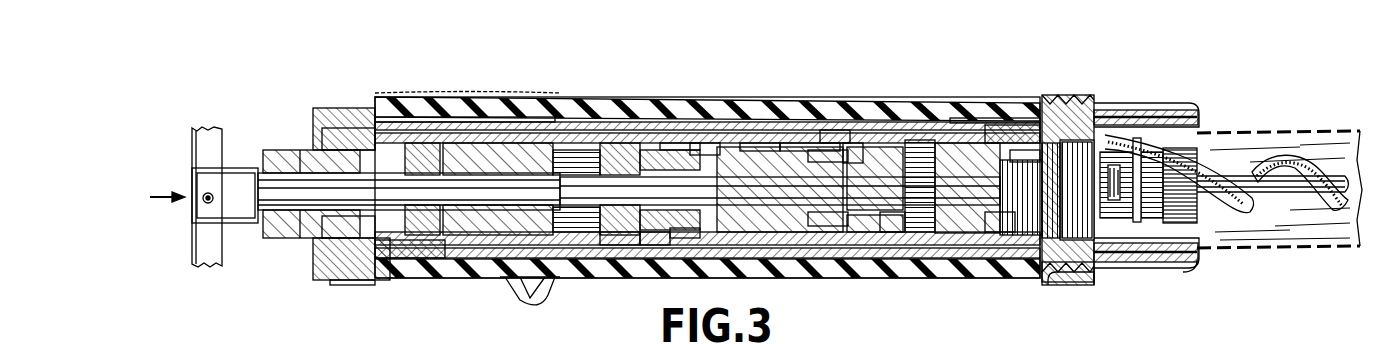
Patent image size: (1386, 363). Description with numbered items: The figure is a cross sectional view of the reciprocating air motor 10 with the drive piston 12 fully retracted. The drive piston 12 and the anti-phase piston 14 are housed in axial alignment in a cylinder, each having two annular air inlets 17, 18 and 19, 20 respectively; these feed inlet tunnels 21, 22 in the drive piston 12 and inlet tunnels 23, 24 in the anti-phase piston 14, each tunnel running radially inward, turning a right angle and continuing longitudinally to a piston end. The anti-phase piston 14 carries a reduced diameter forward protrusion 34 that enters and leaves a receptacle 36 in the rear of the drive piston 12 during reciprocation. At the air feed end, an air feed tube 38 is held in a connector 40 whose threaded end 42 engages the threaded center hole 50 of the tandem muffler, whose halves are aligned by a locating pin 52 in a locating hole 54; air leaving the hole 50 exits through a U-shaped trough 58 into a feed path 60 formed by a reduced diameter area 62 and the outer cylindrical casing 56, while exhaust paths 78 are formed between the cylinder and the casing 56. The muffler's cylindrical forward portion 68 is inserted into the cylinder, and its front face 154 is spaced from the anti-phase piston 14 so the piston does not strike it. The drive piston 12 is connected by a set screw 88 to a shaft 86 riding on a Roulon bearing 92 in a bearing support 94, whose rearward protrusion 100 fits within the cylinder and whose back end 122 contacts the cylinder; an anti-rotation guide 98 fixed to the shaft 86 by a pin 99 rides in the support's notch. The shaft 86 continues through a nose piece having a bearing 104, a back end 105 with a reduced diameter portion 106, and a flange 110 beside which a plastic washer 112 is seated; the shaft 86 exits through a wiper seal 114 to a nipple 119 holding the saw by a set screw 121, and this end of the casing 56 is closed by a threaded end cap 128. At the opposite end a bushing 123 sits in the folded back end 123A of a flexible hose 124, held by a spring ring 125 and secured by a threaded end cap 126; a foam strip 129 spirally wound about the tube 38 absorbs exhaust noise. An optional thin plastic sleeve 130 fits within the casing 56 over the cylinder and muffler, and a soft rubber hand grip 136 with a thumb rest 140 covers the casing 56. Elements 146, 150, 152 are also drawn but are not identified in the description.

The reciprocating air motor 10 is at (858, 92).
The drive piston 12 is at (640, 128).
The anti-phase piston 14 is at (780, 232).
The air inlet 17 is at (652, 238).
The air inlet 18 is at (710, 128).
The air inlet 19 is at (822, 228).
The air inlet 20 is at (922, 135).
The inlet tunnel 21 is at (690, 120).
The inlet tunnel 22 is at (612, 235).
The inlet tunnel 23 is at (868, 232).
The inlet tunnel 24 is at (888, 133).
The forward protrusion 34 is at (722, 218).
The receptacle 36 is at (790, 128).
The air feed tube 38 is at (1288, 200).
The connector 40 is at (1160, 225).
The threaded end 42 is at (1130, 140).
The threaded center hole 50 is at (1080, 132).
The locating pin 52 is at (1020, 150).
The locating hole 54 is at (1050, 155).
The outer cylindrical casing 56 is at (480, 118).
The U-shaped trough 58 is at (1012, 235).
The feed path 60 is at (975, 232).
The reduced diameter area 62 is at (1000, 235).
The cylindrical forward portion 68 is at (945, 232).
The exhaust paths 78 is at (1000, 125).
The shaft 86 is at (318, 198).
The set screw 88 is at (675, 238).
The Roulon bearing 92 is at (515, 242).
The bearing support 94 is at (478, 236).
The anti-rotation guide 98 is at (430, 248).
The pin 99 is at (395, 150).
The rearward protrusion 100 is at (540, 132).
The bearing 104 is at (300, 150).
The back end 105 is at (400, 262).
The reduced diameter portion 106 is at (355, 120).
The flange 110 is at (345, 122).
The plastic washer 112 is at (332, 262).
The wiper seal 114 is at (262, 170).
The nipple 119 is at (212, 177).
The set screw 121 is at (204, 201).
The back end 122 is at (548, 294).
The bushing 123 is at (1100, 270).
The folded back end 123A is at (1137, 240).
The flexible hose 124 is at (1287, 133).
The spring ring 125 is at (1197, 270).
The end cap 126 is at (1175, 105).
The end cap 128 is at (355, 287).
The foam strip 129 is at (1230, 140).
The plastic sleeve 130 is at (965, 120).
The hand grip 136 is at (845, 128).
The thumb rest 140 is at (440, 97).
The seal block 146 is at (600, 132).
The ring 150 is at (760, 122).
The seal 152 is at (830, 122).
The front face 154 is at (905, 232).